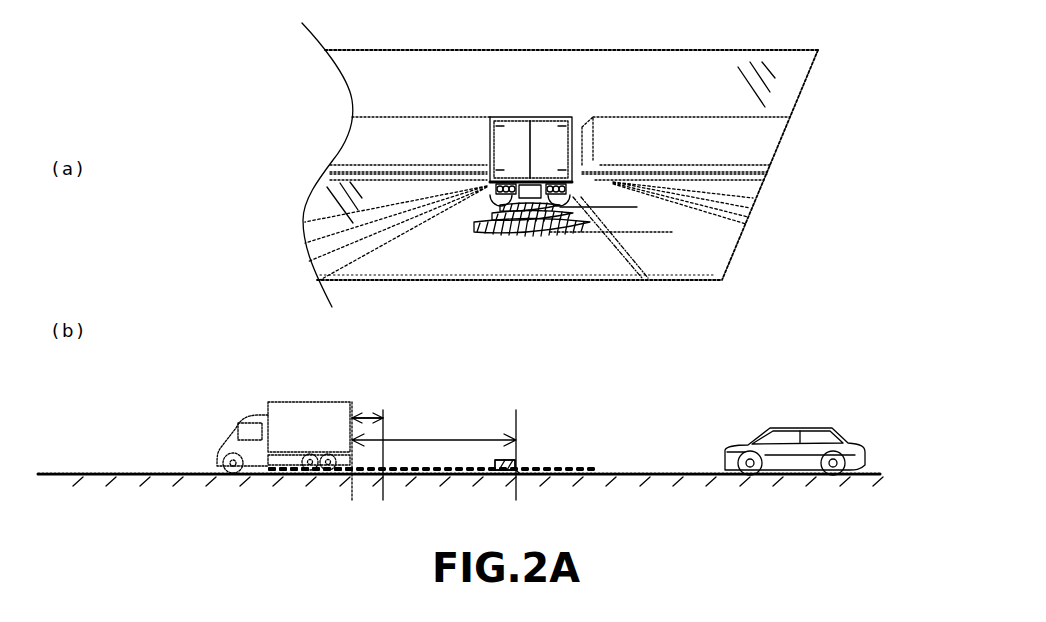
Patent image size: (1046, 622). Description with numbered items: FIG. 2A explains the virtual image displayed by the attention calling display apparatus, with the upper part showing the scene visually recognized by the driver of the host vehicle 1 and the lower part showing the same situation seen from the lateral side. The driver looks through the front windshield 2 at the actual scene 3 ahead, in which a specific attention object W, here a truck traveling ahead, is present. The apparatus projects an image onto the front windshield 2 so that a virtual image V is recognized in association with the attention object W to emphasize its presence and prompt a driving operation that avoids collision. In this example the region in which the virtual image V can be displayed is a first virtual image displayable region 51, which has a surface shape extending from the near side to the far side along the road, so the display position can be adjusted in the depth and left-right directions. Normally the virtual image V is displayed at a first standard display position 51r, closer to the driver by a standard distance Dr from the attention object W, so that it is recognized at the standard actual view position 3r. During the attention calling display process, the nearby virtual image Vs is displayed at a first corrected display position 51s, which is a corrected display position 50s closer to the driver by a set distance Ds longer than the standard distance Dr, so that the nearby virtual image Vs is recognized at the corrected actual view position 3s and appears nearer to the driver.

The host vehicle 1 is at (825, 428).
The front windshield 2 is at (407, 92).
The actual scene 3 is at (665, 72).
The standard actual view position 3r is at (637, 207).
The corrected actual view position 3s is at (673, 232).
The attention object W is at (572, 117).
The virtual image V is at (488, 242).
The nearby virtual image Vs is at (518, 470).
The standard distance Dr is at (365, 417).
The set distance Ds is at (440, 440).
The first virtual image displayable region 51 is at (600, 468).
The first standard display position 51r is at (400, 467).
The first corrected display position 51s is at (520, 467).
The corrected display position 50s is at (505, 465).